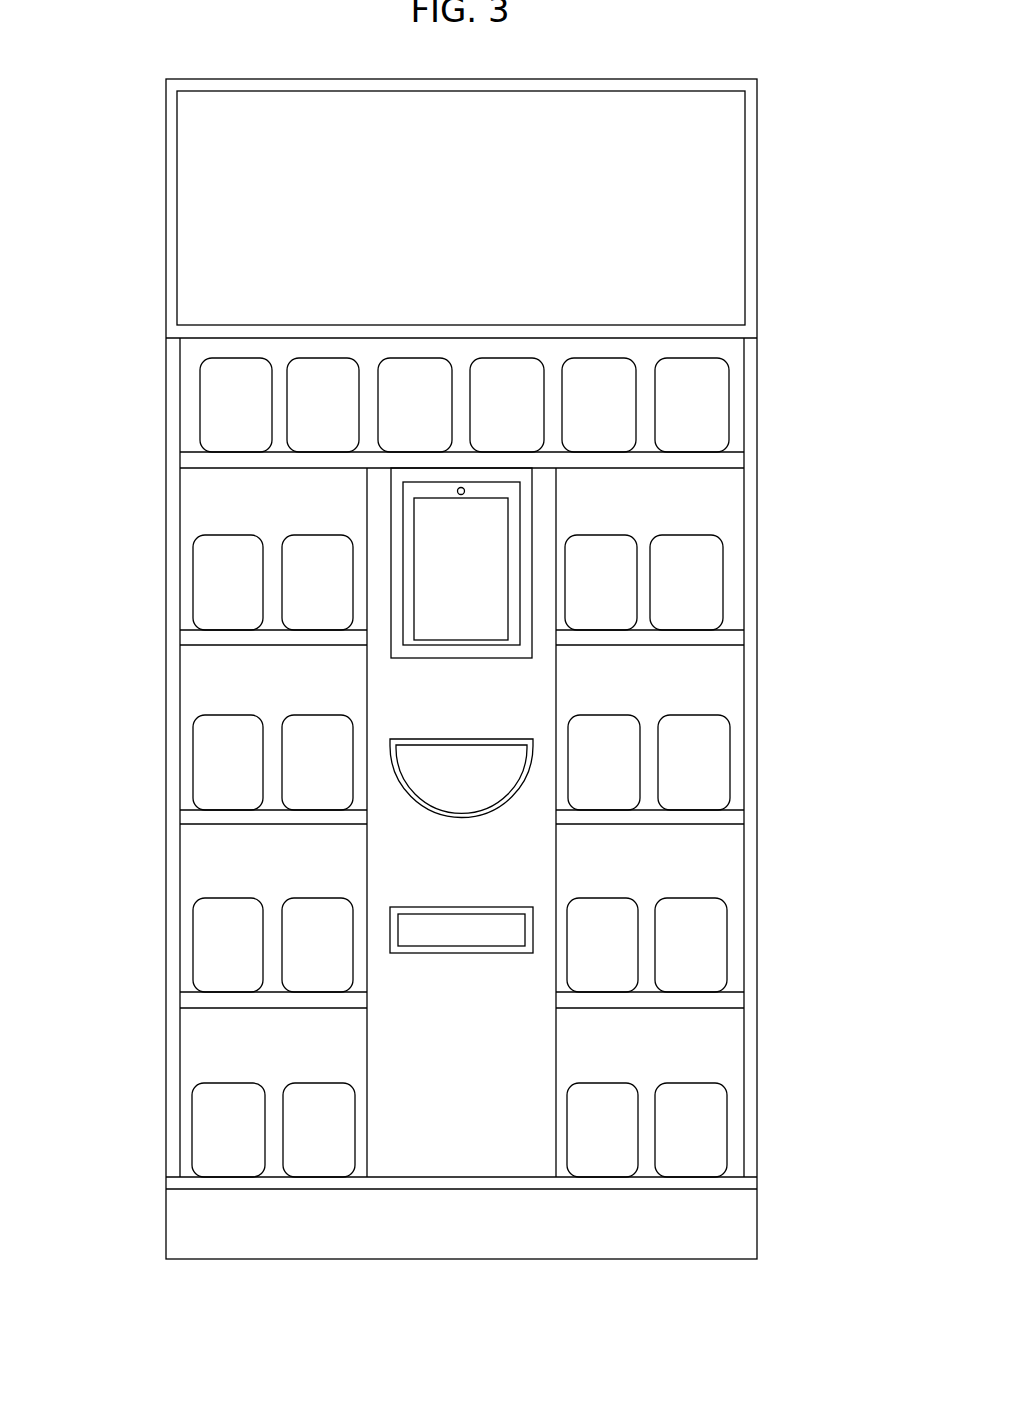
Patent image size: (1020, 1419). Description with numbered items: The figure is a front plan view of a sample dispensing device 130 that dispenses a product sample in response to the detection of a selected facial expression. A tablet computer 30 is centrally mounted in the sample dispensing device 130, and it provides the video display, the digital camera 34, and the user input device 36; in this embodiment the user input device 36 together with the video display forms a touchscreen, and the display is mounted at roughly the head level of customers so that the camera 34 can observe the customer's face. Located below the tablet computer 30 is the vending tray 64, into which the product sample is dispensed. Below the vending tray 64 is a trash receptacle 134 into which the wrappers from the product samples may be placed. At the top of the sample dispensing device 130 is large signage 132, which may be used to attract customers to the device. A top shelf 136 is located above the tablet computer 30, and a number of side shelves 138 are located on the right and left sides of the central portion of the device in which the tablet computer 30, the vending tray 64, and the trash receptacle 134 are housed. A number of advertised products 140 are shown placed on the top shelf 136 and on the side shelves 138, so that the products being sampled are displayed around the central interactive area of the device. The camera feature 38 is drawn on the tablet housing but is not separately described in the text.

The sample dispensing device 130 is at (150, 1240).
The large signage 132 is at (580, 197).
The trash receptacle 134 is at (465, 932).
The top shelf 136 is at (660, 440).
The side shelves 138 is at (190, 630).
The advertised products 140 is at (417, 410).
The tablet computer 30 is at (532, 522).
The digital camera 34 is at (441, 622).
The user input device 36 is at (461, 569).
The camera 38 is at (456, 490).
The vending tray 64 is at (473, 790).